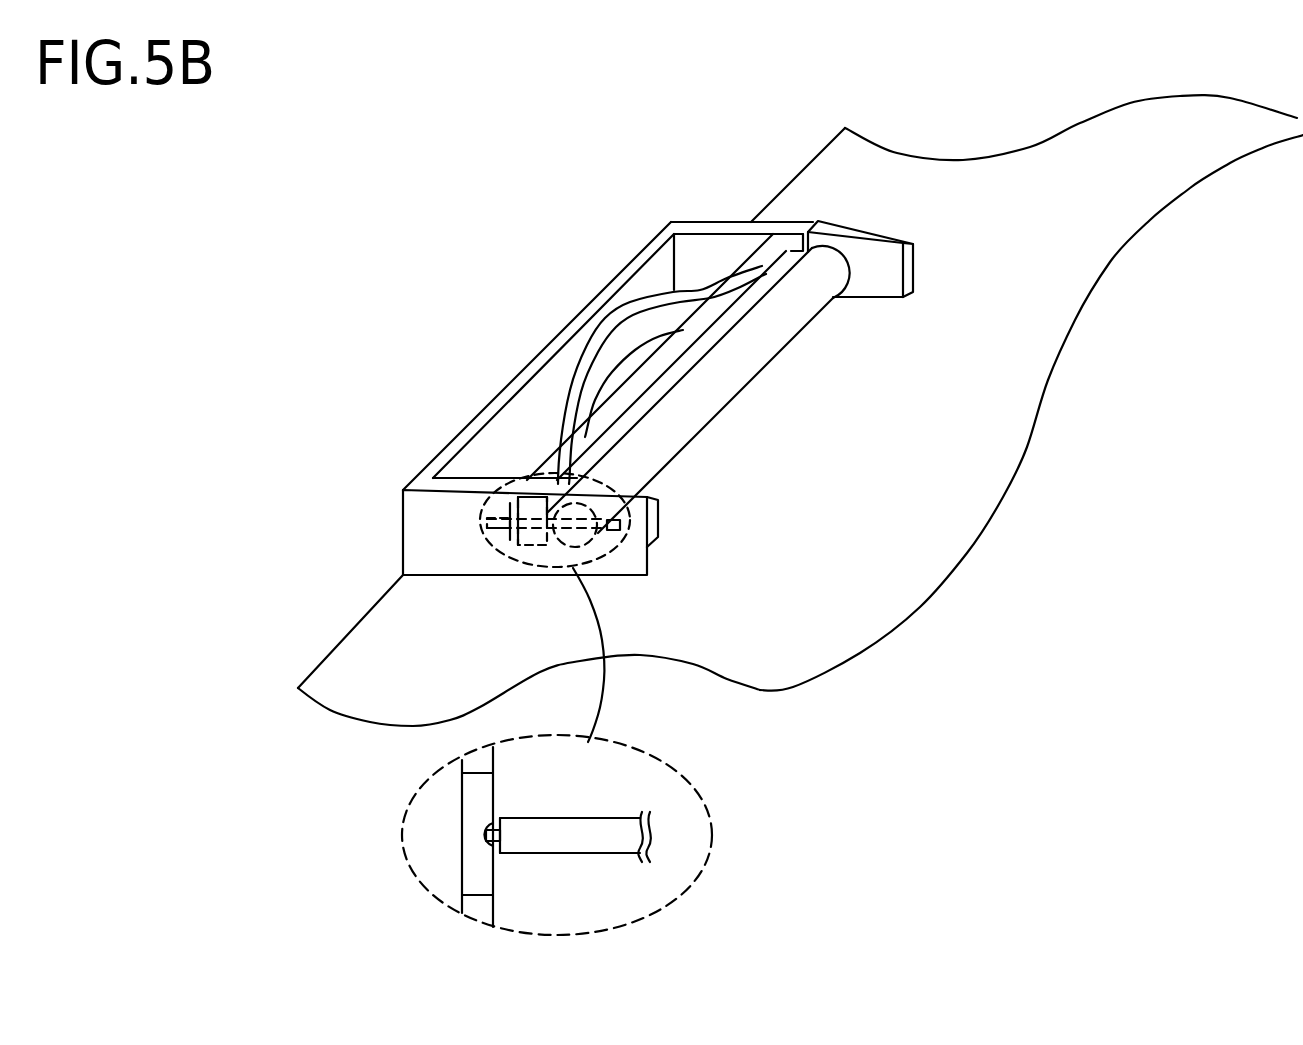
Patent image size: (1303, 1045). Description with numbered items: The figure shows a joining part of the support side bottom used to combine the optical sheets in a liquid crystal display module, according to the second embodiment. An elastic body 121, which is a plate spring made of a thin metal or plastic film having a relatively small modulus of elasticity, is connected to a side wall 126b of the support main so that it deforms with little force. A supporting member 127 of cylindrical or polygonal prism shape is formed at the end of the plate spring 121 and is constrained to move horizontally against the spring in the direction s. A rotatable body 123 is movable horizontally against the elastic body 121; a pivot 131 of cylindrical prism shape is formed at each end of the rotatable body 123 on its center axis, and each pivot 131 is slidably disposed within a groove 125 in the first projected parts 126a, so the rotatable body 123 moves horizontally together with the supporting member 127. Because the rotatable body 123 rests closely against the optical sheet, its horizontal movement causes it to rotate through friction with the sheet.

The elastic body 121 is at (618, 308).
The rotatable body 123 is at (730, 372).
The groove 125 is at (617, 523).
The first projected part 126a is at (461, 487).
The side wall 126b is at (538, 356).
The supporting member 127 is at (757, 274).
The pivot 131 is at (500, 818).